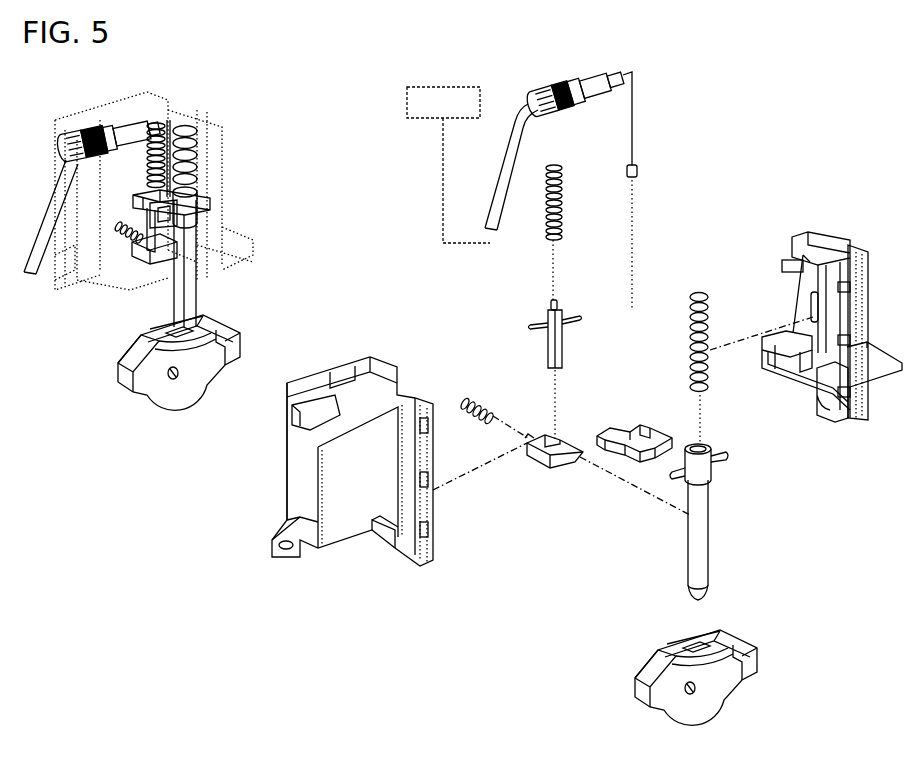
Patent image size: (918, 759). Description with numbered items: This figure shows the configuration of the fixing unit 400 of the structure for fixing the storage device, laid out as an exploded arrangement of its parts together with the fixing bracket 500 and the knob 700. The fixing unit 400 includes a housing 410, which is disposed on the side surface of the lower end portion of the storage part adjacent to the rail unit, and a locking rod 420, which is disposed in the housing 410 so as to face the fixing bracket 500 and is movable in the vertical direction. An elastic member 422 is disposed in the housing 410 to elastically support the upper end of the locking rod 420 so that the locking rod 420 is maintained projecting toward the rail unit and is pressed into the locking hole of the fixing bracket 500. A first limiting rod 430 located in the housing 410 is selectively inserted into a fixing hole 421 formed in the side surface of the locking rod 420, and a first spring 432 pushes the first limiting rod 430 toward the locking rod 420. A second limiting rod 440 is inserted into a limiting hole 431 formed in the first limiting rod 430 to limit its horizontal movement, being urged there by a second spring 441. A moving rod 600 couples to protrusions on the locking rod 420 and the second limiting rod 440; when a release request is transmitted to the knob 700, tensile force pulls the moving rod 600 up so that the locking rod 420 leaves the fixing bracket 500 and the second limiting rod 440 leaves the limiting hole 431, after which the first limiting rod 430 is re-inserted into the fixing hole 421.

The fixing unit 400 is at (220, 94).
The housing 410 is at (338, 533).
The locking rod 420 is at (716, 522).
The fixing hole 421 is at (690, 515).
The elastic member 422 is at (697, 292).
The first limiting rod 430 is at (538, 452).
The limiting hole 431 is at (550, 436).
The first spring 432 is at (470, 400).
The second limiting rod 440 is at (546, 310).
The second spring 441 is at (547, 220).
The fixing bracket 500 is at (138, 349).
The moving rod 600 is at (660, 426).
The knob 700 is at (407, 100).